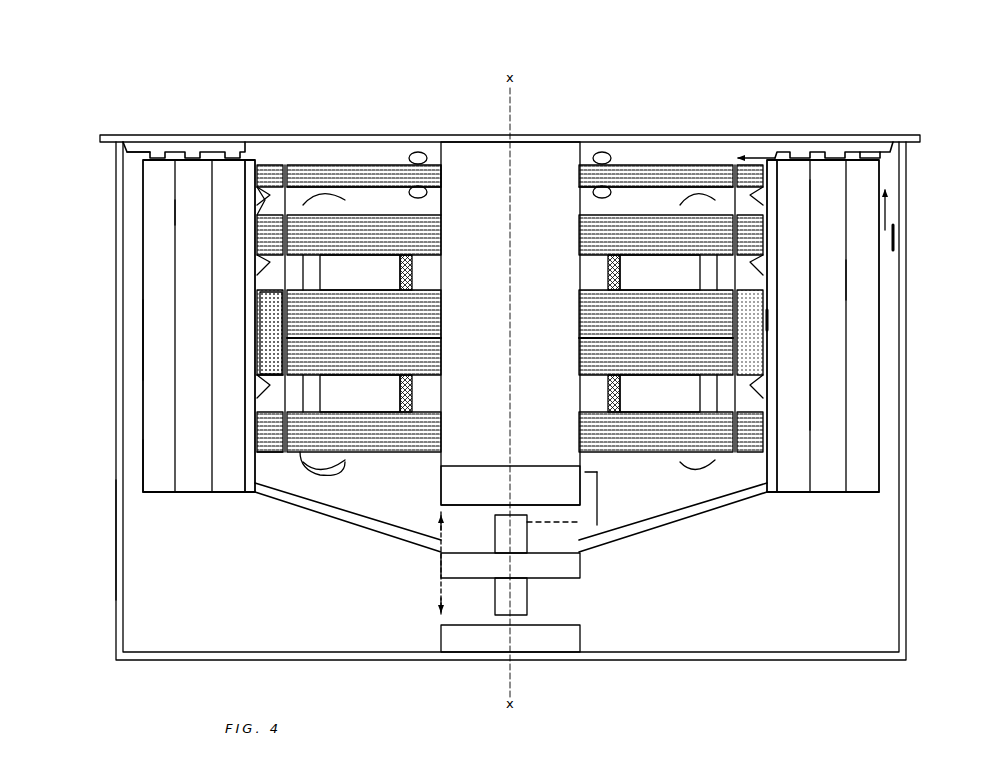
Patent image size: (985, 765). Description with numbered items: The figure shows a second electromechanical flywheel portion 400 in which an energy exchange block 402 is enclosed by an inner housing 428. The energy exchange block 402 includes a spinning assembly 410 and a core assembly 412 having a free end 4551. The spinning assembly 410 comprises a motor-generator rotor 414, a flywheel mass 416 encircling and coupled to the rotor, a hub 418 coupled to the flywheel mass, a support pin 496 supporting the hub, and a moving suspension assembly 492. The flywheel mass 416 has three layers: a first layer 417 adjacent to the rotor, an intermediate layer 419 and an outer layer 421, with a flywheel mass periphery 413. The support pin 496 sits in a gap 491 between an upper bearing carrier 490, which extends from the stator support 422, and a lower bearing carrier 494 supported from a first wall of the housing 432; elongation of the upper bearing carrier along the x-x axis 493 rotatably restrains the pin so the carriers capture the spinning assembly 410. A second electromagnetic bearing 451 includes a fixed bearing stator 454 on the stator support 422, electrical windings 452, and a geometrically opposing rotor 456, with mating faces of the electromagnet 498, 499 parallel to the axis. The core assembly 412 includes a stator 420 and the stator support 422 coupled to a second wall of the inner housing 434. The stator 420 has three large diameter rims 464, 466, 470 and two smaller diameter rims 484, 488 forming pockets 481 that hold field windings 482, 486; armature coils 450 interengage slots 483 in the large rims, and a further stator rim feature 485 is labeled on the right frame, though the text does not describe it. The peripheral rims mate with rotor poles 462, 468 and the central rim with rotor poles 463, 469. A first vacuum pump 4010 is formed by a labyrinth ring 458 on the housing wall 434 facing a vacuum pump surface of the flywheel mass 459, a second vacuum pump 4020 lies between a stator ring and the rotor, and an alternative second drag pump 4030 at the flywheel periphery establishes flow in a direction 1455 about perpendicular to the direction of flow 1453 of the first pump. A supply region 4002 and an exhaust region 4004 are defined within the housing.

The second electromechanical flywheel portion 400 is at (72, 130).
The energy exchange block 402 is at (770, 705).
The spinning assembly 410 is at (767, 500).
The core assembly 412 is at (608, 468).
The flywheel mass periphery 413 is at (135, 462).
The motor-generator rotor 414 is at (262, 482).
The flywheel mass 416 is at (242, 505).
The first layer 417 is at (215, 192).
The hub 418 is at (328, 522).
The intermediate layer 419 is at (185, 212).
The stator 420 is at (650, 212).
The outer layer 421 is at (148, 340).
The stator support 422 is at (448, 205).
The inner housing 428 is at (114, 538).
The first wall of the housing 432 is at (833, 662).
The second wall of the inner housing 434 is at (550, 140).
The armature coils 450 is at (345, 165).
The second electromagnetic bearing 451 is at (622, 165).
The electrical windings 452 is at (417, 160).
The fixed bearing stator 454 is at (375, 165).
The geometrically opposing rotor 456 is at (268, 165).
The labyrinth ring 458 is at (212, 155).
The vacuum pump surface of the flywheel mass 459 is at (160, 150).
The mating rotor pole 462 is at (265, 258).
The mating rotor pole 463 is at (265, 300).
The large diameter rim 464 is at (440, 232).
The large diameter rim 466 is at (440, 334).
The mating rotor pole 468 is at (250, 422).
The mating rotor pole 469 is at (268, 378).
The large diameter rim 470 is at (440, 432).
The pockets 481 is at (666, 278).
The field winding 482 is at (358, 278).
The slots 483 is at (770, 205).
The smaller diameter rim 484 is at (412, 270).
The frame layer 485 is at (770, 280).
The field winding 486 is at (358, 401).
The smaller diameter rim 488 is at (412, 394).
The upper bearing carrier 490 is at (557, 495).
The gap 491 is at (440, 515).
The moving suspension assembly 492 is at (470, 580).
The elongation of the upper bearing carrier along the x-x axis 493 is at (596, 524).
The lower bearing carrier 494 is at (558, 642).
The support pin 496 is at (527, 600).
The mating face of the electromagnet 498 is at (288, 165).
The mating face of the electromagnet 499 is at (725, 165).
The direction of flow 1453 is at (762, 158).
The direction 1455 is at (855, 150).
The supply region 4002 is at (246, 609).
The exhaust region 4004 is at (722, 160).
The first vacuum pump 4010 is at (892, 152).
The second vacuum pump 4020 is at (745, 320).
The alternative second drag pump 4030 is at (880, 232).
The free end 4551 is at (455, 515).